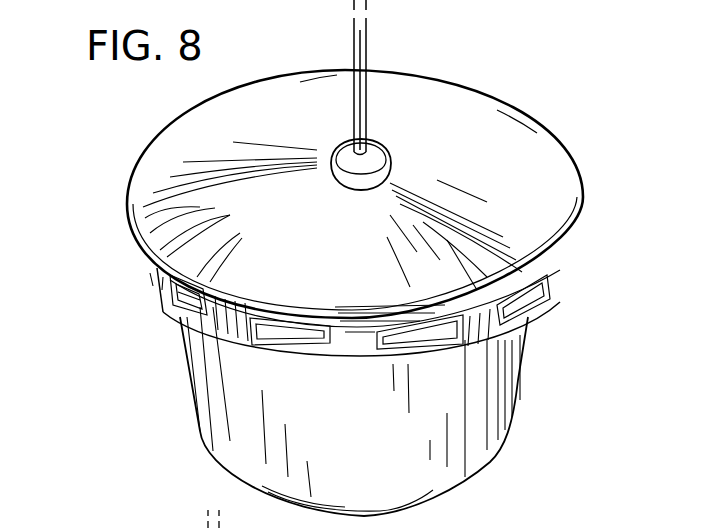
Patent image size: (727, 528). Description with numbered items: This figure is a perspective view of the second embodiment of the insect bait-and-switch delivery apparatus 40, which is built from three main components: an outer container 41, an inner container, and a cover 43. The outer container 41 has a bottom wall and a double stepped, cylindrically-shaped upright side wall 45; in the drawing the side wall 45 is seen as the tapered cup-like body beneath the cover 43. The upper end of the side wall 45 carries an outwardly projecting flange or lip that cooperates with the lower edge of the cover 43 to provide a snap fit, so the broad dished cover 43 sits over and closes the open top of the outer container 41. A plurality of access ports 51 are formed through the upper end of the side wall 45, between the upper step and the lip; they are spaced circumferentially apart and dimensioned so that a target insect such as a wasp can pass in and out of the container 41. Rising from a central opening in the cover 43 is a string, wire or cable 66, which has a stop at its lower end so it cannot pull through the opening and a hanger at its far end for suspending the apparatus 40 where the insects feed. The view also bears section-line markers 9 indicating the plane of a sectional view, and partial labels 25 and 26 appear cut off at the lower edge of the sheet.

The cover 43 is at (133, 155).
The string 66 is at (368, 122).
The section line 9 is at (157, 277).
The insect bait-and-switch delivery apparatus 40 is at (136, 388).
The access ports 51 is at (172, 293).
The outer container 41 is at (487, 469).
The side wall 45 is at (390, 475).
The element 25 is at (189, 519).
The element 26 is at (286, 523).